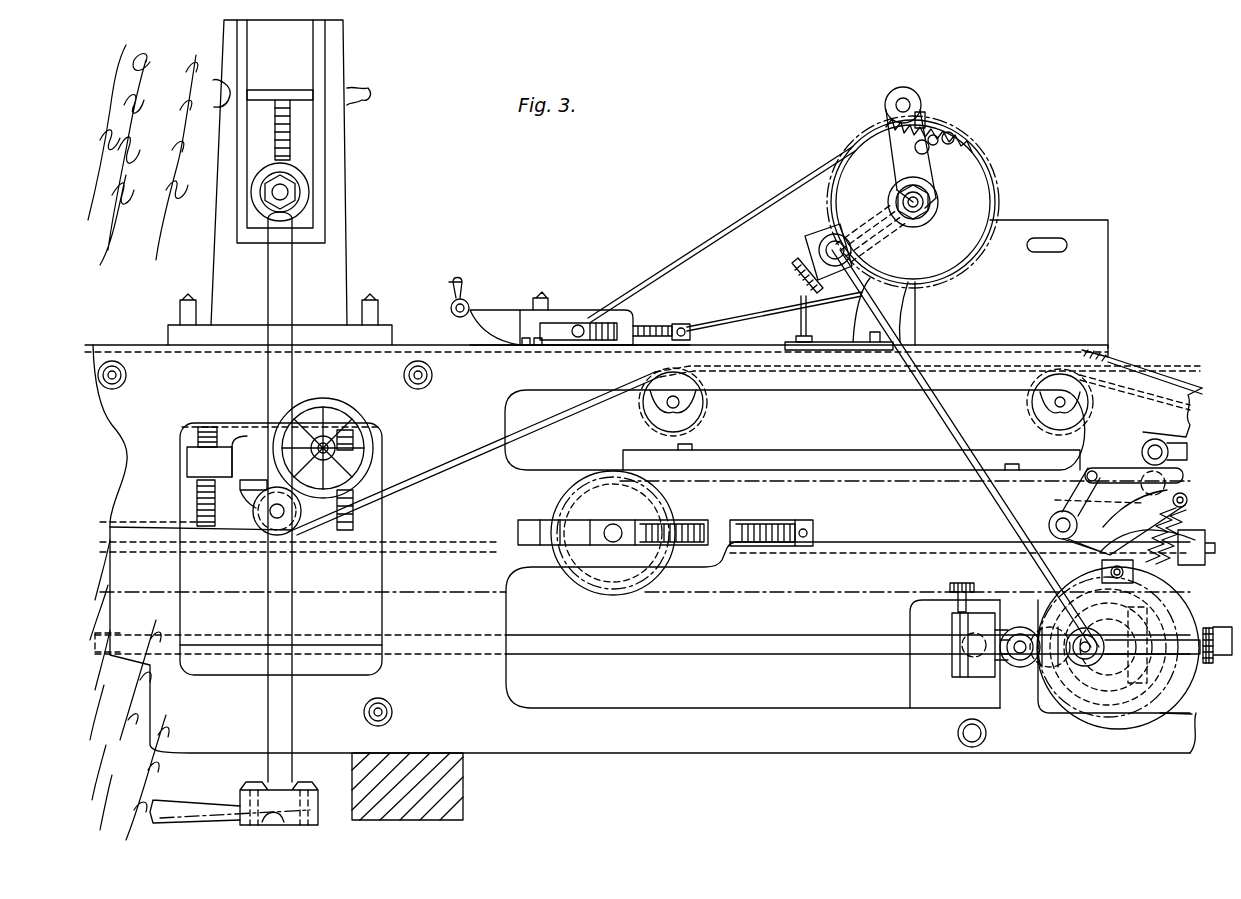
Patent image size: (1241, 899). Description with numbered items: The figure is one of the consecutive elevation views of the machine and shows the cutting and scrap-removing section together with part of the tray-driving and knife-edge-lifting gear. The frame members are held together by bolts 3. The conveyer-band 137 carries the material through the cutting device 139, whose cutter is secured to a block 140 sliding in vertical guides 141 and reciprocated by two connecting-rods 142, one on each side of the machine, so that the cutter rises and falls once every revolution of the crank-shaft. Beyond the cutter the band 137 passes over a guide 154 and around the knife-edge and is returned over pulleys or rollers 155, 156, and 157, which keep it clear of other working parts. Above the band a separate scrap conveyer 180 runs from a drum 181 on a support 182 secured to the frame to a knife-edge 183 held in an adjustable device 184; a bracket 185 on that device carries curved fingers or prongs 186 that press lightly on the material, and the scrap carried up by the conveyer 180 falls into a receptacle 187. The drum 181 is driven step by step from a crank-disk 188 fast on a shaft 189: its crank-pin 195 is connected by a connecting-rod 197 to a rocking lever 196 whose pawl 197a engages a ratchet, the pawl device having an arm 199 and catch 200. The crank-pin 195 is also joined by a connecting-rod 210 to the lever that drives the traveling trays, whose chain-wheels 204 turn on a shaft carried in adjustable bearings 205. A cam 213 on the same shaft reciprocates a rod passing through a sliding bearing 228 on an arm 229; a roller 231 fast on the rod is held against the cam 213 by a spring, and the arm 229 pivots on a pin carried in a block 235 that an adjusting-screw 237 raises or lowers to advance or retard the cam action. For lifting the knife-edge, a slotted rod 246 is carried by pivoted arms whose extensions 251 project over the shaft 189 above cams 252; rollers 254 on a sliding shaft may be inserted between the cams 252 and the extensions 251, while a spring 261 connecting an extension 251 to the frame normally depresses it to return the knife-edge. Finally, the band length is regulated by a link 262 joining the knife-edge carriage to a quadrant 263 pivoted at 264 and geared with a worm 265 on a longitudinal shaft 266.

The bolts 3 is at (127, 380).
The conveyer-band 137 is at (478, 350).
The cutting device 139 is at (343, 187).
The block 140 is at (310, 165).
The vertical guides 141 is at (243, 42).
The connecting-rods 142 is at (285, 270).
The guide 154 is at (1090, 350).
The pulley or roller 155 is at (1033, 415).
The pulley or roller 156 is at (705, 402).
The pulley or roller 157 is at (285, 522).
The scrap conveyer 180 is at (700, 238).
The drum 181 is at (995, 187).
The support 182 is at (813, 323).
The knife-edge 183 is at (560, 348).
The adjustable device 184 is at (563, 320).
The bracket 185 is at (498, 303).
The curved fingers or prongs 186 is at (467, 322).
The receptacle 187 is at (1011, 284).
The crank-disk 188 is at (1182, 678).
The shaft 189 is at (1113, 650).
The crank-pin 195 is at (1084, 655).
The rocking lever 196 is at (812, 240).
The connecting-rod 197 is at (940, 422).
The pawl 197a is at (945, 82).
The arm 199 is at (945, 155).
The catch 200 is at (955, 137).
The chain-wheels 204 is at (575, 585).
The adjustable bearings 205 is at (590, 525).
The connecting-rod 210 is at (1194, 715).
The cam 213 is at (1022, 625).
The sliding bearing 228 is at (1200, 636).
The arm 229 is at (1022, 627).
The roller 231 is at (990, 682).
The block 235 is at (950, 660).
The adjusting-screw 237 is at (950, 585).
The rod 246 is at (1107, 468).
The extensions 251 is at (1050, 524).
The cams 252 is at (1048, 630).
The rollers 254 is at (1100, 578).
The spring 261 is at (1186, 512).
The link 262 is at (1148, 443).
The quadrant 263 is at (1062, 502).
The pivot 264 is at (1167, 482).
The worm 265 is at (1180, 565).
The shaft 266 is at (835, 553).